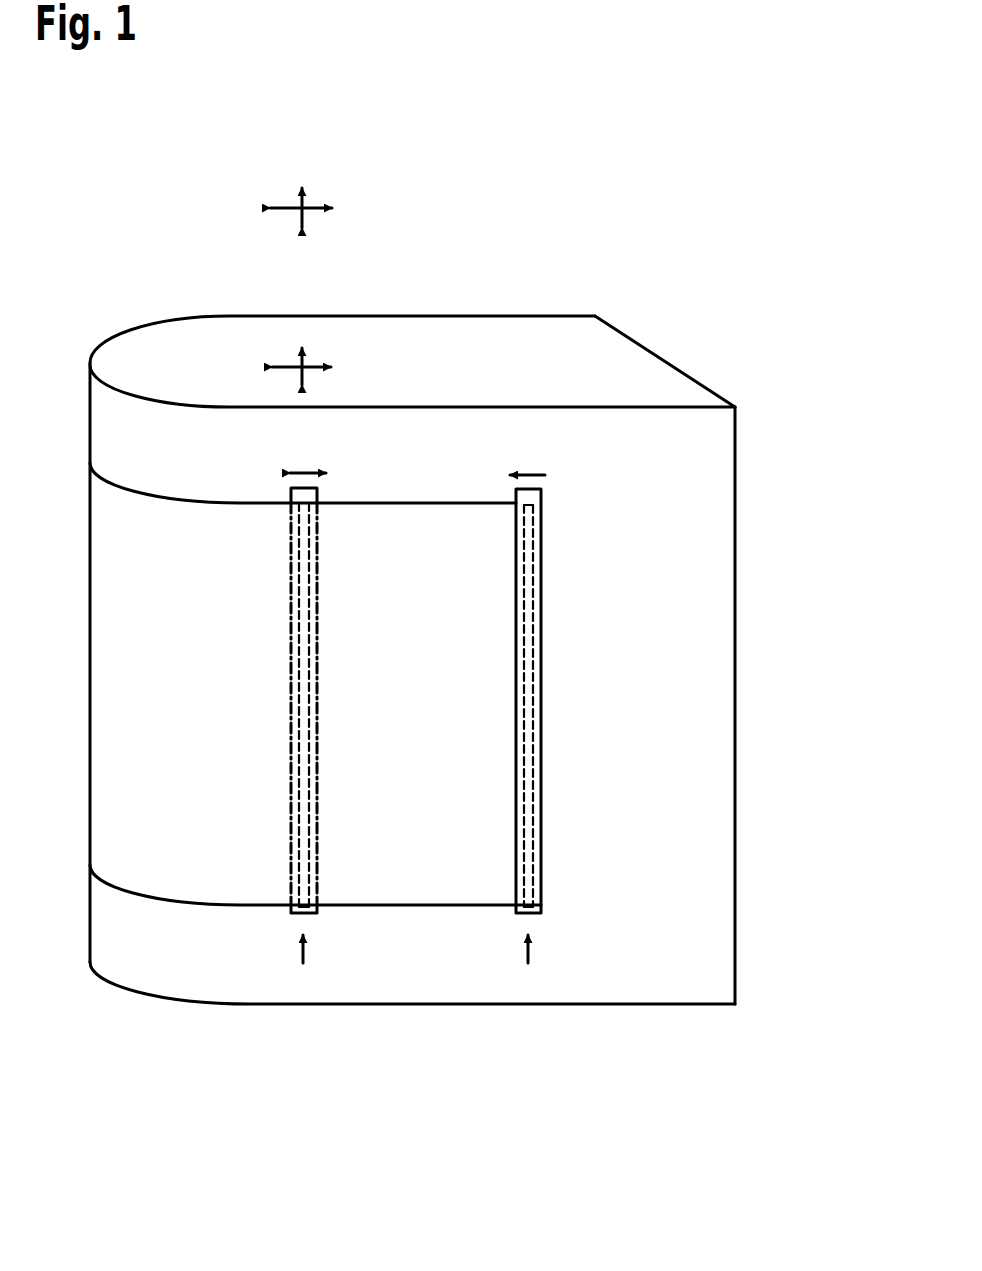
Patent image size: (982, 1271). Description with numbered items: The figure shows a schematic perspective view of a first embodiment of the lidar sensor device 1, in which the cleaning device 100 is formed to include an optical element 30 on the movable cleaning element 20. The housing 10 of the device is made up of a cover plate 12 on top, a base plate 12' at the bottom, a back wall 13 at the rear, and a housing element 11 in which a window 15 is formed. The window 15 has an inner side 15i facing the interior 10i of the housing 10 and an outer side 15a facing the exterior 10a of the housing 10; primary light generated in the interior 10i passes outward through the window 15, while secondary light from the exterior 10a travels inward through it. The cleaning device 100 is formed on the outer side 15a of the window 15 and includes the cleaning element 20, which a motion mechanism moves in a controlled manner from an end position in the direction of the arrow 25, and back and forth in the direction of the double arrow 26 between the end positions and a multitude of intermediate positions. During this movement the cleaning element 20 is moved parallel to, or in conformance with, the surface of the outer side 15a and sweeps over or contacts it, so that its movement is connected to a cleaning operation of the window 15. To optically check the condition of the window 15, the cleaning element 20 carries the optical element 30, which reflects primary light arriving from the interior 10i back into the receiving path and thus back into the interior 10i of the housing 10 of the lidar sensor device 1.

The lidar sensor device 1 is at (772, 234).
The housing 10 is at (843, 417).
The exterior of housing 10a is at (304, 200).
The interior of housing 10i is at (302, 360).
The housing element 11 is at (693, 433).
The cover plate 12 is at (412, 348).
The base plate 12' is at (412, 1033).
The back wall 13 is at (735, 453).
The window 15 is at (115, 625).
The outer side of window 15a is at (121, 553).
The inner side of window 15i is at (173, 490).
The cleaning element 20 is at (305, 540).
The arrow 25 is at (552, 444).
The double arrow 26 is at (305, 470).
The optical element 30 is at (305, 595).
The cleaning device 100 is at (387, 520).